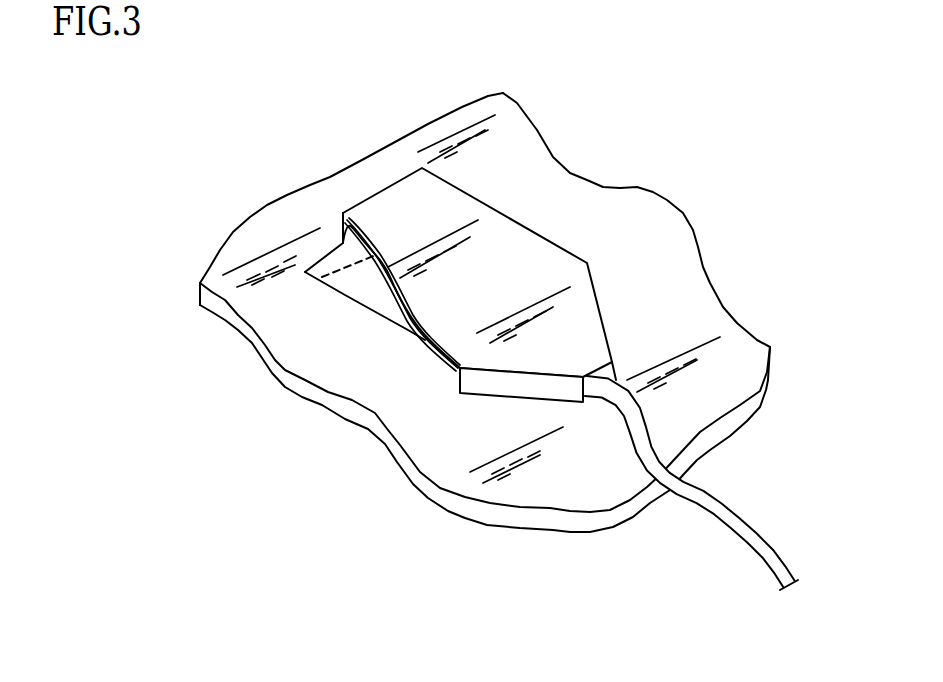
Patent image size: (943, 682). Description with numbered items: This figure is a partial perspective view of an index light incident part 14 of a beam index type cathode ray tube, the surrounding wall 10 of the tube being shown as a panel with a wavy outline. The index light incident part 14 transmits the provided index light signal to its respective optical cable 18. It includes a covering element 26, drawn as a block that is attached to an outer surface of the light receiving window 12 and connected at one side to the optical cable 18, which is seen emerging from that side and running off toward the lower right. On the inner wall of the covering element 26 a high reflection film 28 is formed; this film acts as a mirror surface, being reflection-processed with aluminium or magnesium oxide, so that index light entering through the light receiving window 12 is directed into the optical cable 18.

The base plate 10 is at (485, 312).
The light receiving window 12 is at (348, 287).
The index light incident part 14 is at (668, 335).
The optical cable 18 is at (707, 483).
The covering element 26 is at (475, 240).
The high reflection film 28 is at (378, 344).